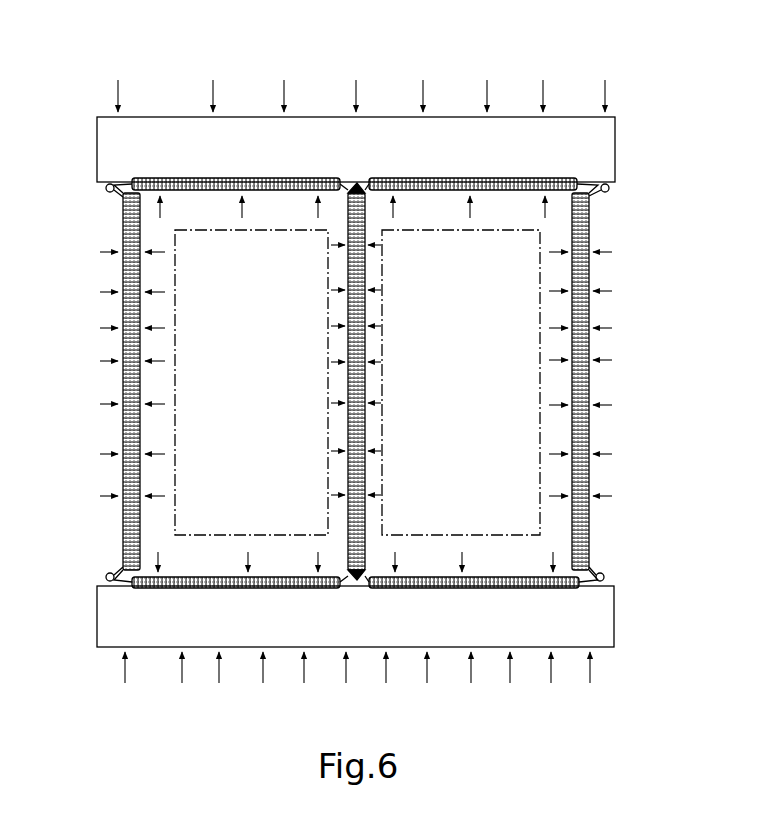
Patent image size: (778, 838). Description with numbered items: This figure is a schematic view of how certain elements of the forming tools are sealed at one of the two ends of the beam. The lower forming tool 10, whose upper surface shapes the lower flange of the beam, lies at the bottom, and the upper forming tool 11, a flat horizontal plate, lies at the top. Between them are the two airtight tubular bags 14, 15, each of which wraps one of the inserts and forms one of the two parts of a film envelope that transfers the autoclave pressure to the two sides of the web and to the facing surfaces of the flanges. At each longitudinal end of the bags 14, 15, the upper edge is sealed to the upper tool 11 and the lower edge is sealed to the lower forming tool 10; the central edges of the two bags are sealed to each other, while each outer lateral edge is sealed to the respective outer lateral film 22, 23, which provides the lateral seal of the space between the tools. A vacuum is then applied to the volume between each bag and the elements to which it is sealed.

The lower forming tool 10 is at (372, 632).
The upper forming tool 11 is at (268, 130).
The tubular bag 14 is at (190, 192).
The tubular bag 15 is at (428, 192).
The outer film 22 is at (110, 572).
The outer film 23 is at (607, 192).